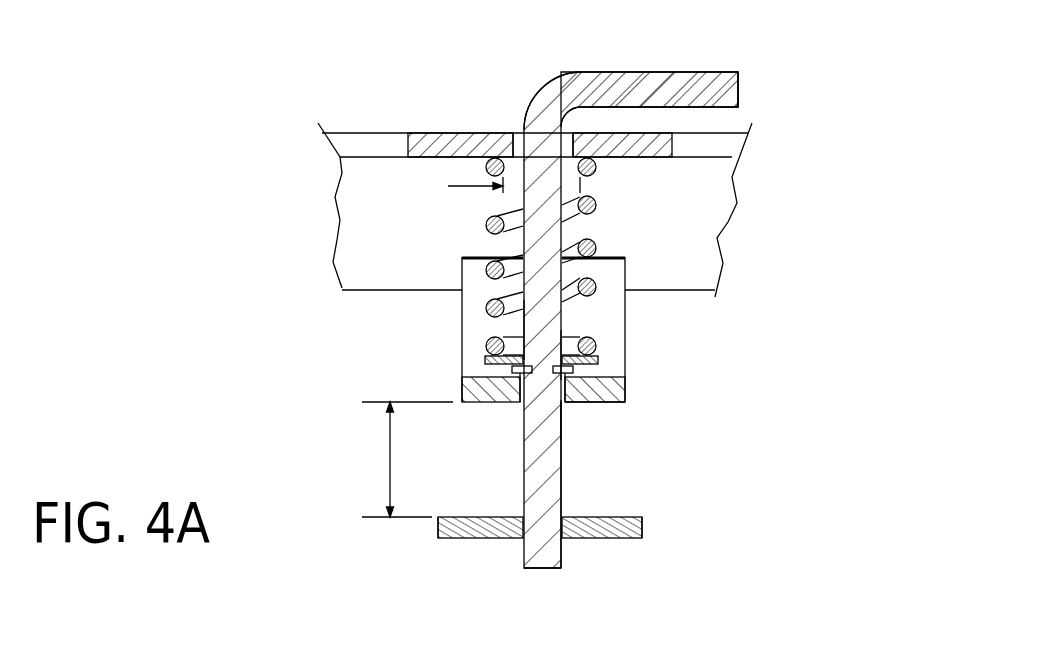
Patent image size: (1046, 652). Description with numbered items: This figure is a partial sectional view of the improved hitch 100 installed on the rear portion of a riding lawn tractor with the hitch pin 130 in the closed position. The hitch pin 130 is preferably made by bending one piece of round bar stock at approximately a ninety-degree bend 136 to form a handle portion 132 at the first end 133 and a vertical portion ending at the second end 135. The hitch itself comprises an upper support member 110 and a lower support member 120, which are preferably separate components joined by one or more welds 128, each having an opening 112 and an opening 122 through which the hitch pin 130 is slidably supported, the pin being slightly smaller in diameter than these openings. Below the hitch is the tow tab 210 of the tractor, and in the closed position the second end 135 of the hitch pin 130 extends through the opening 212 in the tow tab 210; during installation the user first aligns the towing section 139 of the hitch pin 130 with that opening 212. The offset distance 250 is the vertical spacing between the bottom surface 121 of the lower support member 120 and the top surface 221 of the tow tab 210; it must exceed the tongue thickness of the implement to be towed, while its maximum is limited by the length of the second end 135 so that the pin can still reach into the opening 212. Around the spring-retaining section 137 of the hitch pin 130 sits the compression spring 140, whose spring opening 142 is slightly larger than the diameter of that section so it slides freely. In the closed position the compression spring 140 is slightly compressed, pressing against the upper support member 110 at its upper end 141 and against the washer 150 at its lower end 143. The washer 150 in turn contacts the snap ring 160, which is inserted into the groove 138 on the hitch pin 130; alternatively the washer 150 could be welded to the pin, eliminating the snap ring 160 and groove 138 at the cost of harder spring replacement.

The improved hitch 100 is at (280, 124).
The upper support member 110 is at (418, 129).
The opening 112 is at (516, 132).
The lower support member 120 is at (450, 367).
The bottom surface 121 is at (614, 403).
The opening 122 is at (558, 407).
The weld 128 is at (625, 257).
The hitch pin 130 is at (594, 68).
The handle portion 132 is at (677, 72).
The first end 133 is at (738, 88).
The second end 135 is at (542, 568).
The bend 136 is at (538, 88).
The spring-retaining section 137 is at (522, 332).
The groove 138 is at (553, 376).
The towing section 139 is at (562, 495).
The compression spring 140 is at (477, 222).
The upper end 141 is at (486, 166).
The spring opening 142 is at (590, 186).
The lower end 143 is at (485, 357).
The washer 150 is at (598, 361).
The snap ring 160 is at (574, 370).
The tow tab 210 is at (428, 532).
The opening 212 is at (563, 517).
The top surface 221 is at (643, 517).
The offset distance 250 is at (388, 455).